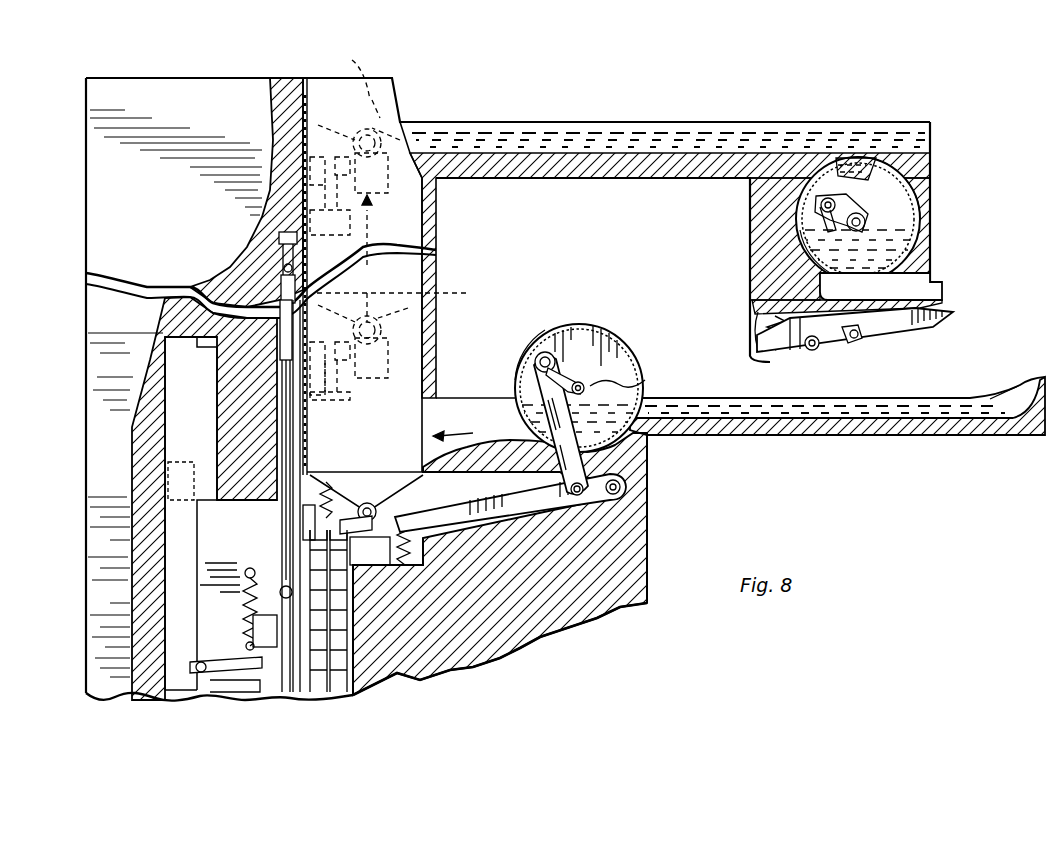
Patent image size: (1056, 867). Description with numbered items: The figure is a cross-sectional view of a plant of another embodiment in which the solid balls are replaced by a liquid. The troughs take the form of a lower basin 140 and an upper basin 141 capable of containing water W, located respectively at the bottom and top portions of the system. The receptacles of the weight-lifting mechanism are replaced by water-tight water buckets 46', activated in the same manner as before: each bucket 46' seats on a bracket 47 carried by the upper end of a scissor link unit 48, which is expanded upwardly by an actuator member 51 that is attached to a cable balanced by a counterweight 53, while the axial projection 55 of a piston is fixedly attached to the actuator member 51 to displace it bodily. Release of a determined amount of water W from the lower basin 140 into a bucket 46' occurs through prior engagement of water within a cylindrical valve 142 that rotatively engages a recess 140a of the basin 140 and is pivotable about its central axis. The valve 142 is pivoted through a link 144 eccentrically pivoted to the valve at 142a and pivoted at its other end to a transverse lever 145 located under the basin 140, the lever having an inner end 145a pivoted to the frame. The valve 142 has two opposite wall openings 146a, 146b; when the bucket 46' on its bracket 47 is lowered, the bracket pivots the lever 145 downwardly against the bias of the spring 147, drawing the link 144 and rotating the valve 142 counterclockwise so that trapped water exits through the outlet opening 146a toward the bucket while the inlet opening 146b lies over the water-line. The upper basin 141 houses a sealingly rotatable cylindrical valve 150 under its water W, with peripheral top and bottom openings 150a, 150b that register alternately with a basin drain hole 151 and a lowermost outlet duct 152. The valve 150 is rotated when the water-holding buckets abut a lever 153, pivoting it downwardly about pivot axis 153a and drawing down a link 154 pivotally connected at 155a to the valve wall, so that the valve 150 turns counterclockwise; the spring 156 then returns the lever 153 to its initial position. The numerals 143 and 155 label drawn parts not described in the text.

The water bucket 46' is at (409, 260).
The bracket 47 is at (350, 472).
The spring 147 is at (405, 473).
The scissor link unit 48 is at (352, 638).
The actuator member 51 is at (272, 697).
The counterweight 53 is at (287, 278).
The axial projection 55 is at (170, 605).
The water W is at (813, 138).
The lower basin 140 is at (930, 425).
The recess 140a is at (640, 442).
The upper basin 141 is at (677, 165).
The cylindrical valve 142 is at (620, 340).
The eccentric pivot 142a is at (553, 332).
The crank arm 143 is at (575, 375).
The link 144 is at (557, 408).
The transverse lever 145 is at (480, 510).
The inner end 145a is at (612, 495).
The outlet opening 146a is at (512, 405).
The inlet opening 146b is at (645, 383).
The cylindrical valve 150 is at (905, 205).
The top opening 150a is at (897, 170).
The bottom opening 150b is at (817, 262).
The basin drain hole 151 is at (860, 155).
The lowermost outlet duct 152 is at (880, 275).
The lever 153 is at (913, 330).
The pivot axis 153a is at (810, 351).
The link 154 is at (812, 235).
The arm 155 is at (827, 230).
The pivotal connection 155a is at (820, 205).
The spring 156 is at (775, 340).